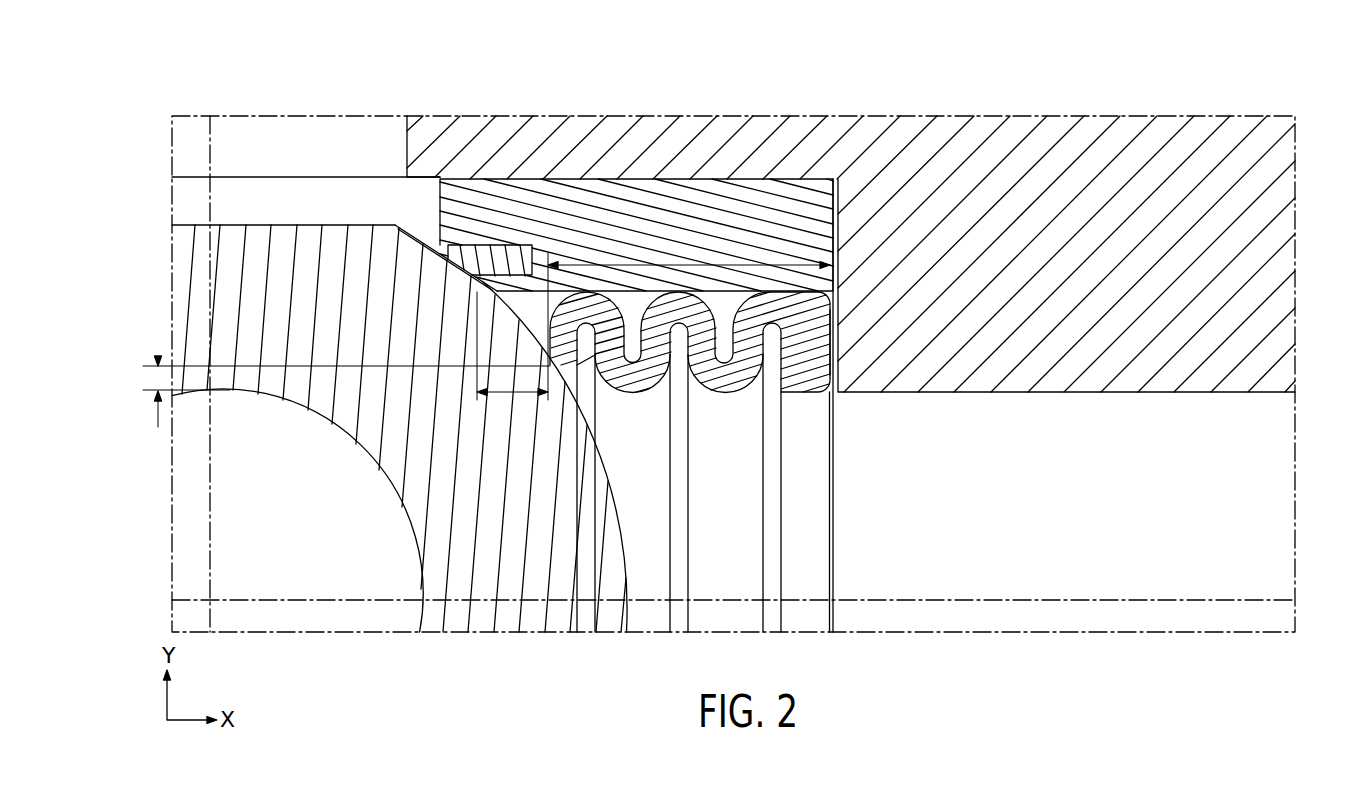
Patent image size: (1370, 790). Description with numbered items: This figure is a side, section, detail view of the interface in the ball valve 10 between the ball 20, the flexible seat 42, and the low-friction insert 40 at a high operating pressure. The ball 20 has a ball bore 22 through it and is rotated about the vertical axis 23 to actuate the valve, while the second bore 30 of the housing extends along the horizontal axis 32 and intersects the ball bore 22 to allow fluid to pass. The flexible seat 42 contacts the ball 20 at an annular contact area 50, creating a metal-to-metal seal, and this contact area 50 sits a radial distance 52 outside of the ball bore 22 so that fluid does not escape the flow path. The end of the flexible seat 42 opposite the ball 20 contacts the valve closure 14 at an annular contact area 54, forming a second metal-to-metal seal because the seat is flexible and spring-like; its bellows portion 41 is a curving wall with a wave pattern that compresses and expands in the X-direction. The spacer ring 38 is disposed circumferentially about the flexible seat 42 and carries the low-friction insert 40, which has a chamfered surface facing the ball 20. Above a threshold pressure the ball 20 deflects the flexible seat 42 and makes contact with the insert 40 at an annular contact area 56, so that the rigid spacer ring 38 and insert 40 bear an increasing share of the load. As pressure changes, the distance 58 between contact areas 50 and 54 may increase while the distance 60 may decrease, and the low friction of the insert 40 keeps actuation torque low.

The ball valve 10 is at (1191, 69).
The valve closure 14 is at (1255, 213).
The ball 20 is at (600, 480).
The ball bore 22 is at (262, 517).
The vertical axis 23 is at (211, 567).
The second bore 30 is at (919, 539).
The horizontal axis 32 is at (890, 600).
The spacer ring 38 is at (738, 210).
The low-friction insert 40 is at (497, 260).
The bellows portion 41 is at (645, 391).
The flexible seat 42 is at (733, 391).
The annular contact area 50 is at (548, 366).
The radial distance 52 is at (157, 358).
The annular contact area 54 is at (833, 358).
The annular contact area 56 is at (458, 262).
The distance 58 is at (513, 398).
The distance 60 is at (693, 266).